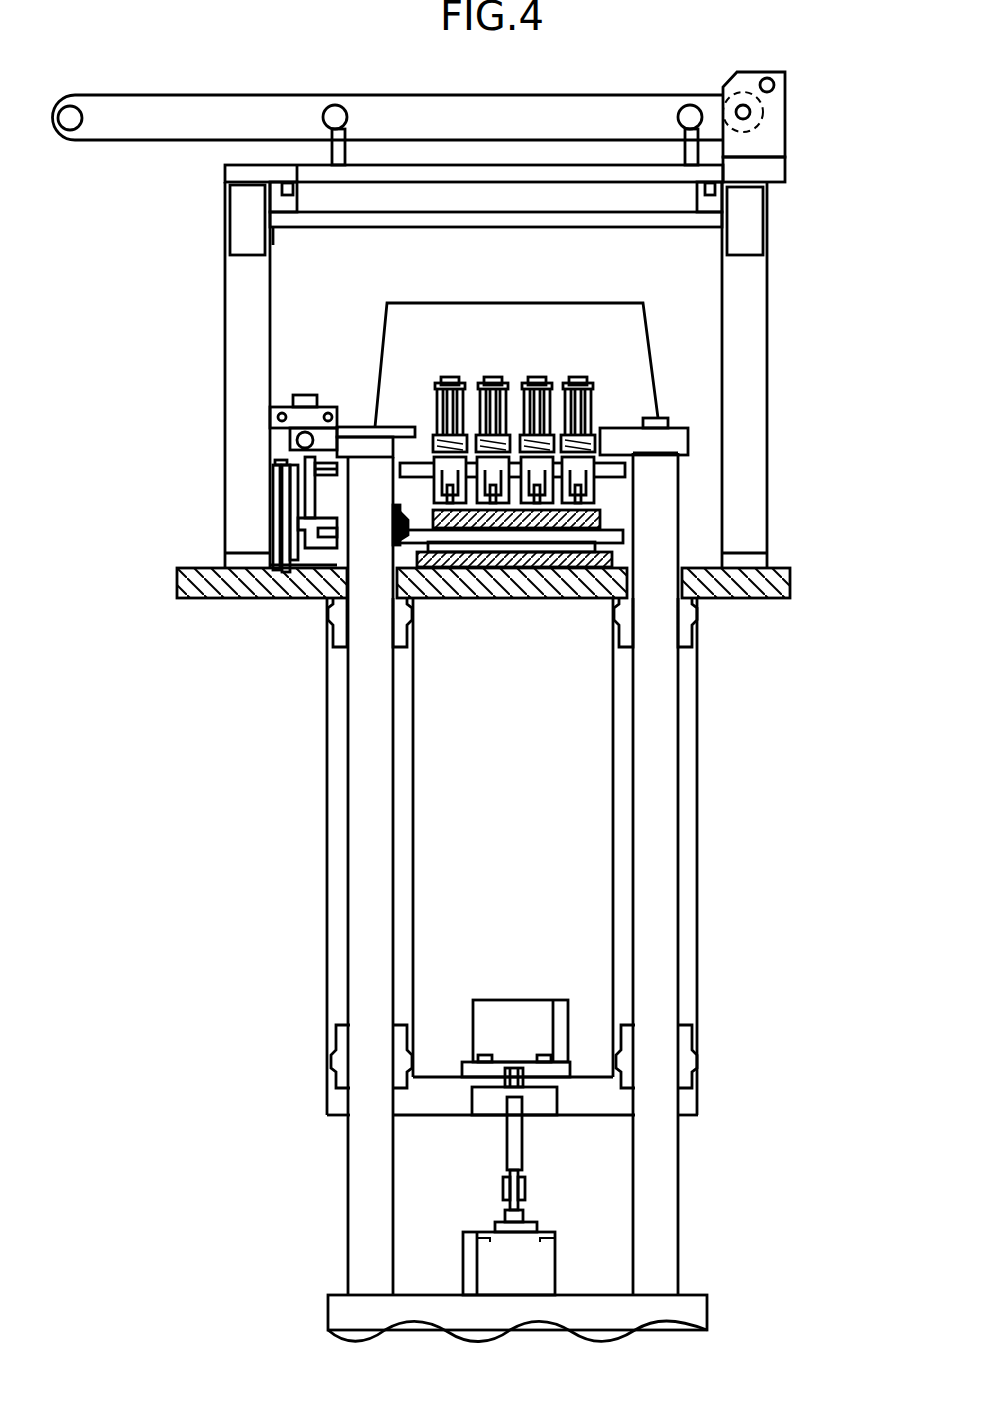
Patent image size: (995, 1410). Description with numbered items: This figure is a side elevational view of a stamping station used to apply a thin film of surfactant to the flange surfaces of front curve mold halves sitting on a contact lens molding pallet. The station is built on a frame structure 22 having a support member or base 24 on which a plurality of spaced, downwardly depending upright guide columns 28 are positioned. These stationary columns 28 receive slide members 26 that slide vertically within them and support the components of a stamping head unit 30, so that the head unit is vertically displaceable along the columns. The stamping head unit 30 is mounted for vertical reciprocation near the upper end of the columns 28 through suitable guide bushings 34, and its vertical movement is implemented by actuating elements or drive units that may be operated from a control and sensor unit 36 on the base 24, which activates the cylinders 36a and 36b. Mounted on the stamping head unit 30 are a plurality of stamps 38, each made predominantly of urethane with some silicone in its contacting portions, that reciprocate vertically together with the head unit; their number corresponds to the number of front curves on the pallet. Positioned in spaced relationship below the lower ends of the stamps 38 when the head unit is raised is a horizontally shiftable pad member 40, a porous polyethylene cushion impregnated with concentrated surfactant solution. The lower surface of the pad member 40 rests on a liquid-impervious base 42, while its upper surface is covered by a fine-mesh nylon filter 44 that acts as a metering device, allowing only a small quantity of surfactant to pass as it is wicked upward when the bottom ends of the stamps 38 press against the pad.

The frame structure 22 is at (581, 1046).
The base 24 is at (526, 582).
The slide members 26 is at (506, 874).
The guide columns 28 is at (512, 856).
The stamping head unit 30 is at (598, 403).
The guide bushings 34 is at (512, 843).
The control and sensor unit 36 is at (513, 837).
The cylinder 36a is at (612, 1075).
The cylinder 36b is at (606, 1232).
The stamps 38 is at (577, 500).
The pad member 40 is at (560, 541).
The base 42 is at (341, 570).
The filter 44 is at (295, 483).